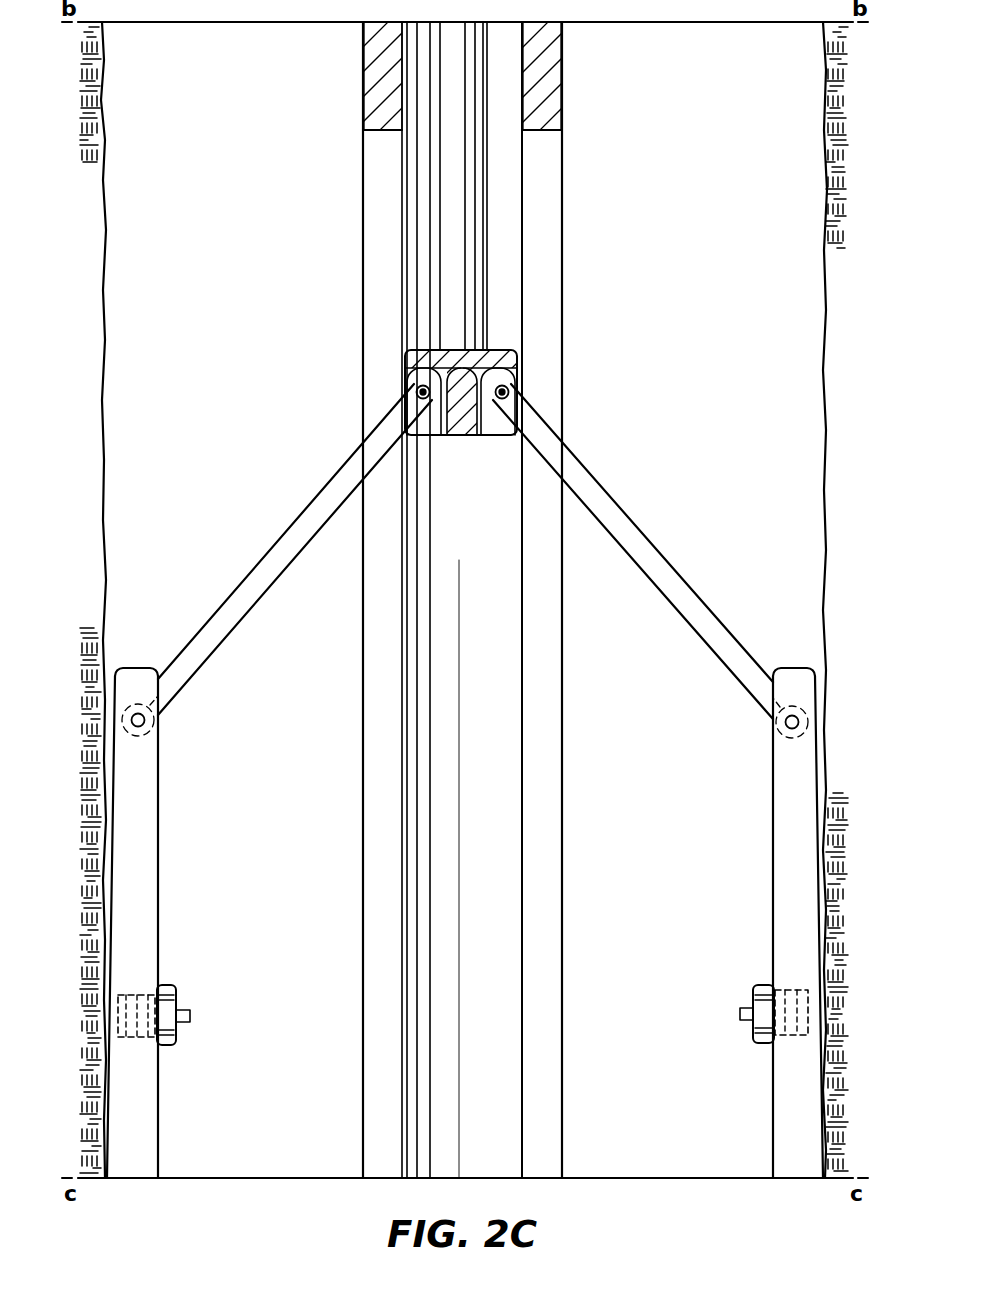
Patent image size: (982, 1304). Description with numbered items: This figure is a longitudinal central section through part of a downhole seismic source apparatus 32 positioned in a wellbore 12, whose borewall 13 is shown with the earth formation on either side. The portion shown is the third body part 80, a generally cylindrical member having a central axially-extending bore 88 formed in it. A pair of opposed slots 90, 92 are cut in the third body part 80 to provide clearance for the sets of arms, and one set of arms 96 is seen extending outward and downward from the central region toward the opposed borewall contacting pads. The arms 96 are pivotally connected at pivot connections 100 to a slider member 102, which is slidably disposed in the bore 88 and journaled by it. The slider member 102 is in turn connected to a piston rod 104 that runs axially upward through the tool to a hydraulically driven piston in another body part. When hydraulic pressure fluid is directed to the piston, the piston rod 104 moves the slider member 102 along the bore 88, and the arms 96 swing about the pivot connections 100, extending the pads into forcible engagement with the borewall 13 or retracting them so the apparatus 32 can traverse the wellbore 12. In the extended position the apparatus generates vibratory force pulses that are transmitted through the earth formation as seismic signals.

The wellbore 12 is at (108, 312).
The borewall 13 is at (106, 210).
The apparatus 32 is at (465, 749).
The third body part 80 is at (464, 589).
The central axially-extending bore 88 is at (517, 234).
The slot 90 is at (385, 130).
The slot 92 is at (562, 149).
The arms 96 is at (302, 509).
The pivot connections 100 is at (423, 437).
The slider member 102 is at (468, 348).
The piston rod 104 is at (442, 268).